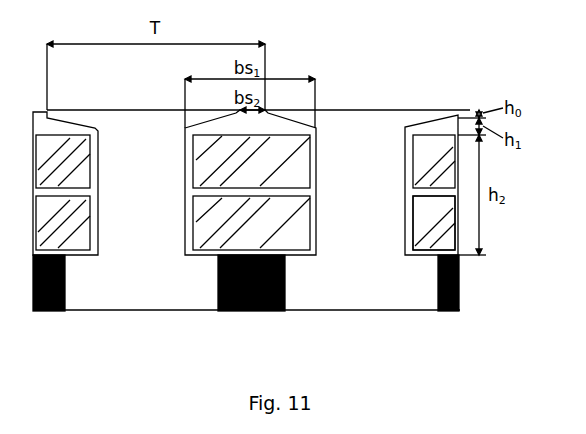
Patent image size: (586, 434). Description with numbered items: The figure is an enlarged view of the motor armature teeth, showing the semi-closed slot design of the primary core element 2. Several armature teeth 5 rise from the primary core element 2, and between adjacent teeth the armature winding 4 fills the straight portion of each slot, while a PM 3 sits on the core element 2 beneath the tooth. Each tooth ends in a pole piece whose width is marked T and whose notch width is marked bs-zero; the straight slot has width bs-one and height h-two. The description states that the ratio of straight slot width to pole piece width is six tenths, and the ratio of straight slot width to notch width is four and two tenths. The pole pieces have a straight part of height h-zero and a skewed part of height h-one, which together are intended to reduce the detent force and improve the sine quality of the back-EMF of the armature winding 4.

The primary core element 2 is at (141, 284).
The PM 3 is at (251, 312).
The armature winding 4 is at (426, 235).
The armature teeth 5 is at (361, 178).